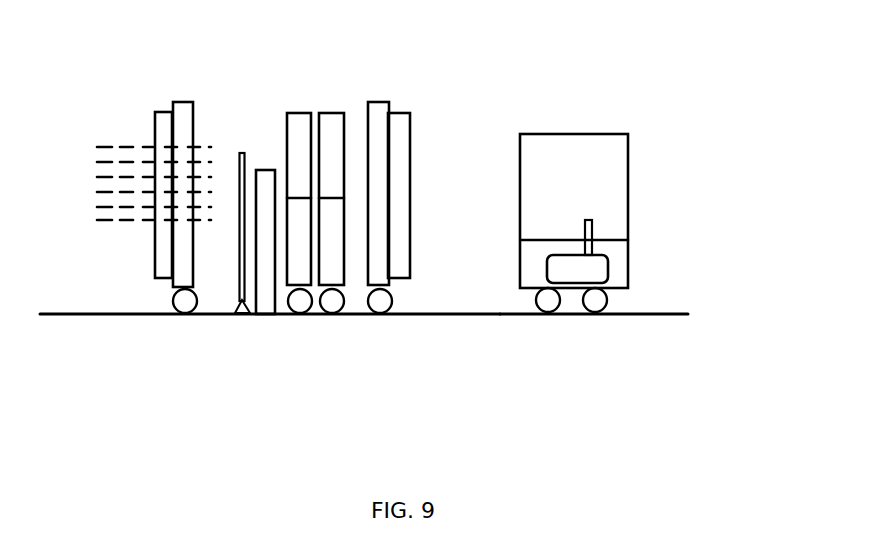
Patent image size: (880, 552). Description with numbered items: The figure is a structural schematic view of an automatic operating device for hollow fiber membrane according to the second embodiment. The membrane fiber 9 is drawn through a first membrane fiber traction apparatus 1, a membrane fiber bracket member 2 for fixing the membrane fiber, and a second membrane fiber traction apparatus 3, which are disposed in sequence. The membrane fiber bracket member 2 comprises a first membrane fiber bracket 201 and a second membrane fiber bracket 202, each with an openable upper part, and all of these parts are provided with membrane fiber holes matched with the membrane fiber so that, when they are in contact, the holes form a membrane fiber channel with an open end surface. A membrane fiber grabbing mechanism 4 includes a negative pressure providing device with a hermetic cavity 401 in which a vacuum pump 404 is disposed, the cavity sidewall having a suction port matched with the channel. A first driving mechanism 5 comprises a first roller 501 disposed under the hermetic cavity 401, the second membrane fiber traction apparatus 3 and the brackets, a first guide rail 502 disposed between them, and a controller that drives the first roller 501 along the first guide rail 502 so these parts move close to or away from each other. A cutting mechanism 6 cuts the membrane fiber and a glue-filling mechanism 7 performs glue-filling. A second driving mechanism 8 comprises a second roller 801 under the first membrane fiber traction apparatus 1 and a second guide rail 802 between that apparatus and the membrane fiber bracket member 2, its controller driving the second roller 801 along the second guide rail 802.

The first membrane fiber traction apparatus 1 is at (184, 122).
The membrane fiber bracket member 2 is at (380, 219).
The first membrane fiber bracket 201 is at (297, 137).
The second membrane fiber bracket 202 is at (347, 257).
The second membrane fiber traction apparatus 3 is at (400, 129).
The membrane fiber grabbing mechanism 4 is at (623, 164).
The hermetic cavity 401 is at (628, 167).
The vacuum pump 404 is at (598, 269).
The first driving mechanism 5 is at (646, 334).
The first roller 501 is at (603, 316).
The first guide rail 502 is at (515, 316).
The cutting mechanism 6 is at (248, 316).
The glue-filling mechanism 7 is at (258, 287).
The second driving mechanism 8 is at (136, 321).
The second roller 801 is at (183, 300).
The second guide rail 802 is at (130, 317).
The membrane fiber 9 is at (108, 147).